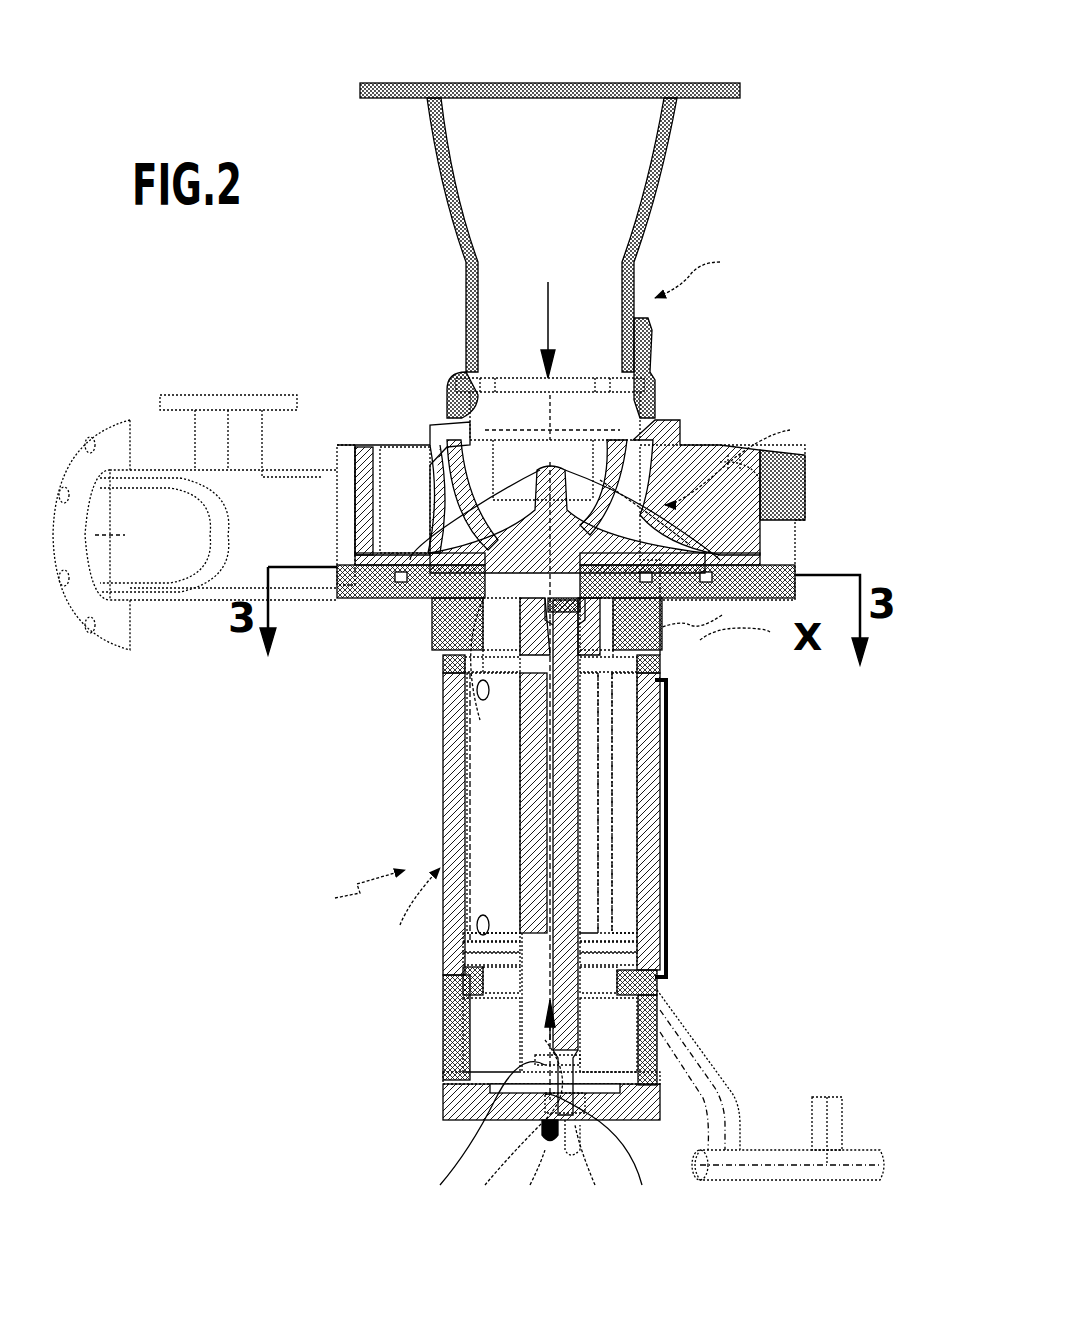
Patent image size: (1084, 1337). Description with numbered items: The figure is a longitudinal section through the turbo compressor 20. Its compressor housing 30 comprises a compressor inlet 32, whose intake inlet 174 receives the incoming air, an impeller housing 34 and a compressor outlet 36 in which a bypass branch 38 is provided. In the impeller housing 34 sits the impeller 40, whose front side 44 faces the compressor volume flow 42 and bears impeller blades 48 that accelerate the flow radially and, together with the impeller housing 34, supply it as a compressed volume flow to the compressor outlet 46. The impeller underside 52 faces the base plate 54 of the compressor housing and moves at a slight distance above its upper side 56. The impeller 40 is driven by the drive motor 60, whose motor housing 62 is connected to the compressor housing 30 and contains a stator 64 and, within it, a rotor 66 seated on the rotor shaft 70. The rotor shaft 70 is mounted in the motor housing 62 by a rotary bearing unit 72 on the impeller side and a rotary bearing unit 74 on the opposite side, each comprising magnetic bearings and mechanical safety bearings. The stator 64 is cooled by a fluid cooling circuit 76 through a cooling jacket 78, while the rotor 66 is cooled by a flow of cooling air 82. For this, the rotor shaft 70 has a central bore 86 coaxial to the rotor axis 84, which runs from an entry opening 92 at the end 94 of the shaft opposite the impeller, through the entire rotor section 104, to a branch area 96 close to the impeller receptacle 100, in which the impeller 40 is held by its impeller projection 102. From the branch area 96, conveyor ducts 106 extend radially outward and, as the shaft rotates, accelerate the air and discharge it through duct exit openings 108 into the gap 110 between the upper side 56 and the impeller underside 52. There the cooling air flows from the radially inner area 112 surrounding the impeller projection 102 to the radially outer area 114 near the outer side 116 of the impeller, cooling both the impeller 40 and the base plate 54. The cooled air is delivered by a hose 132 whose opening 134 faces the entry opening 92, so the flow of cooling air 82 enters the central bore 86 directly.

The intake inlet 174 is at (430, 95).
The compressor inlet 32 is at (485, 130).
The compressor housing 30 is at (703, 270).
The compressor volume flow 42 is at (554, 282).
The impeller blades 48 is at (645, 348).
The front side 44 is at (640, 405).
The impeller 40 is at (625, 450).
The impeller housing 34 is at (640, 485).
The compressor outlet 46 is at (743, 457).
The upper side 56 is at (730, 555).
The radially outer area 114 is at (700, 560).
The base plate 54 is at (660, 578).
The bypass branch 38 is at (245, 428).
The compressor outlet 36 is at (234, 565).
The impeller receptacle 100 is at (520, 545).
The outer side 116 is at (520, 565).
The radially inner area 112 is at (505, 600).
The duct exit openings 108 is at (510, 612).
The rotary bearing unit 72 is at (520, 640).
The conveyor ducts 106 is at (500, 660).
The branch area 96 is at (510, 700).
The cooling jacket 78 is at (485, 750).
The rotor section 104 is at (540, 810).
The turbo compressor 20 is at (353, 891).
The drive motor 60 is at (405, 906).
The motor housing 62 is at (455, 935).
The central bore 86 is at (490, 1010).
The rotary bearing unit 74 is at (480, 1085).
The rotor shaft 70 is at (580, 832).
The rotor axis 84 is at (565, 856).
The stator 64 is at (620, 889).
The rotor 66 is at (600, 916).
The impeller underside 52 is at (640, 610).
The gap 110 is at (600, 615).
The impeller projection 102 is at (610, 640).
The fluid cooling circuit 76 is at (735, 1085).
The flow of cooling air 82 is at (496, 1133).
The entry opening 92 is at (513, 1106).
The opening 134 is at (535, 1166).
The hose 132 is at (592, 1166).
The end 94 is at (602, 1152).